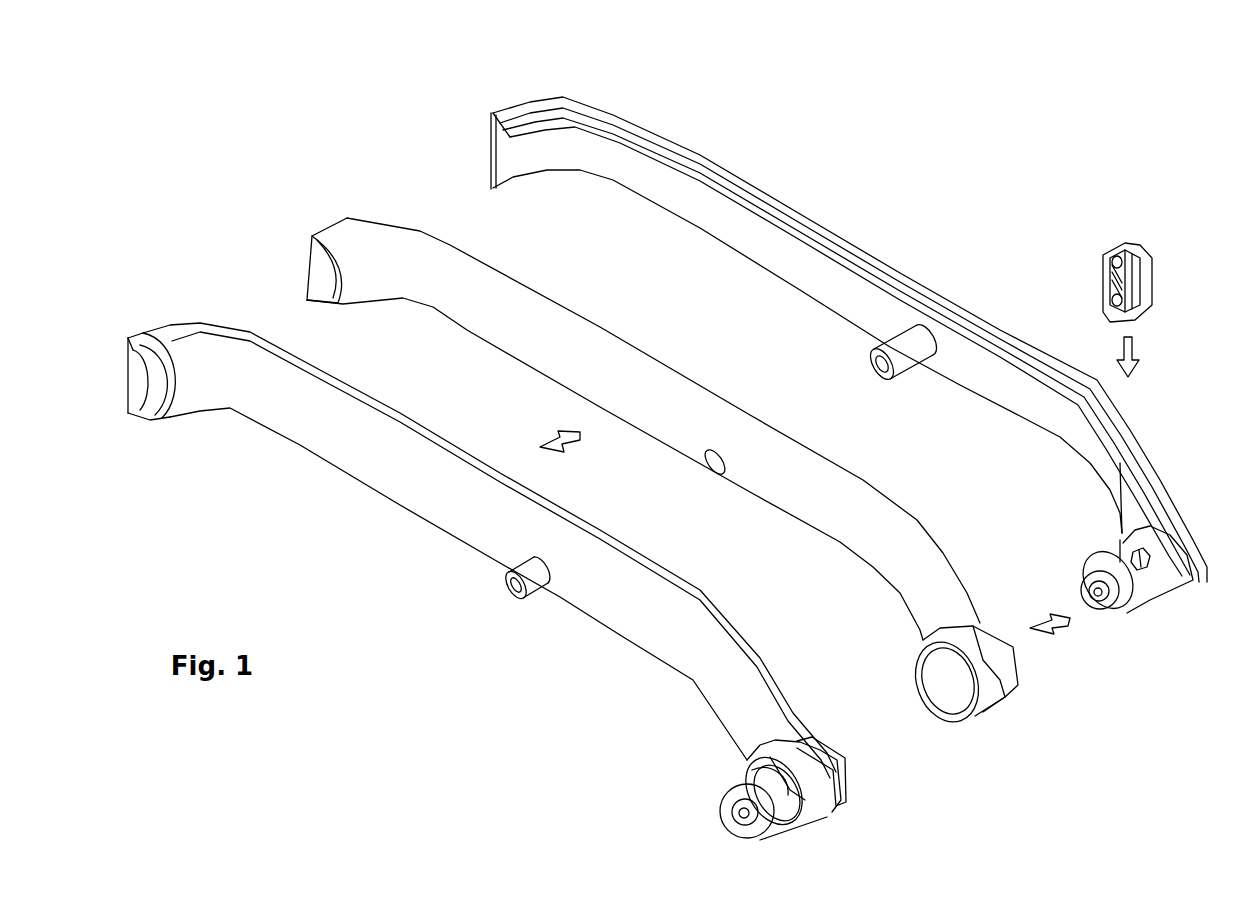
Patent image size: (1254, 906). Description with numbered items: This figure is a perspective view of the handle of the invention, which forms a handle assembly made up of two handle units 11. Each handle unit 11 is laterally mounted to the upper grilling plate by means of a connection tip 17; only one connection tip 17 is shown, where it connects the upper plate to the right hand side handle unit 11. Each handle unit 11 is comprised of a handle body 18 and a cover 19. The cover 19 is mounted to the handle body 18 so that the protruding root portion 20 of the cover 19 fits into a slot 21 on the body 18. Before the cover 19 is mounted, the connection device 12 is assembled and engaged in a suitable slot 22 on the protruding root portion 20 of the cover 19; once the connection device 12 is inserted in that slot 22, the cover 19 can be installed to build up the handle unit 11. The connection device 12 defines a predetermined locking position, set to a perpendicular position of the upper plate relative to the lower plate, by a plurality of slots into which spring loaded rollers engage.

The handle unit 11 is at (487, 581).
The connection device 12 is at (1085, 258).
The connection tip 17 is at (495, 589).
The handle body 18 is at (563, 347).
The cover 19 is at (735, 215).
The protruding root portion 20 is at (1138, 573).
The slot 21 is at (943, 680).
The slot 22 is at (1137, 563).